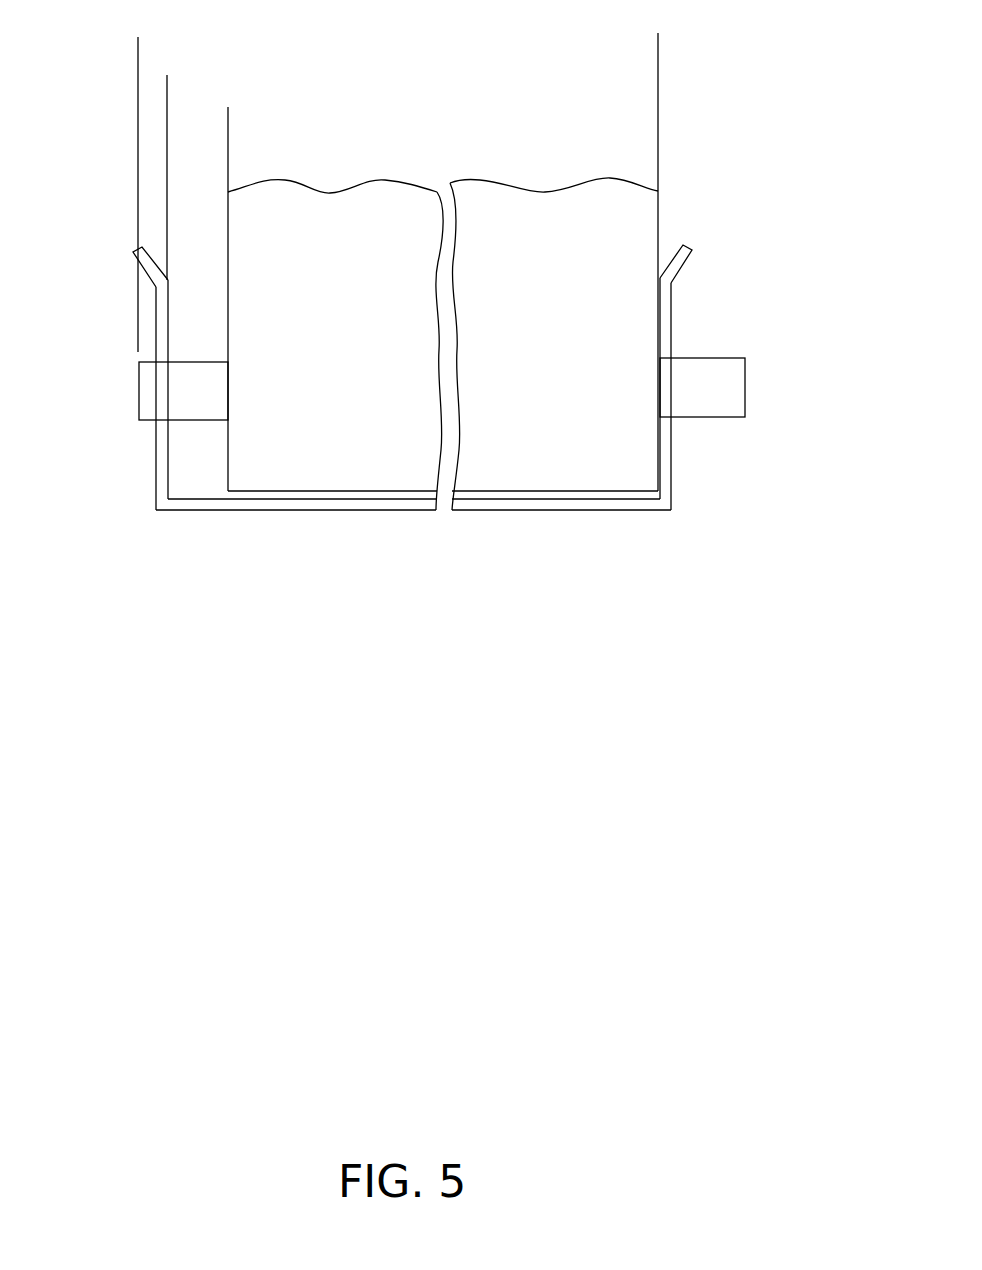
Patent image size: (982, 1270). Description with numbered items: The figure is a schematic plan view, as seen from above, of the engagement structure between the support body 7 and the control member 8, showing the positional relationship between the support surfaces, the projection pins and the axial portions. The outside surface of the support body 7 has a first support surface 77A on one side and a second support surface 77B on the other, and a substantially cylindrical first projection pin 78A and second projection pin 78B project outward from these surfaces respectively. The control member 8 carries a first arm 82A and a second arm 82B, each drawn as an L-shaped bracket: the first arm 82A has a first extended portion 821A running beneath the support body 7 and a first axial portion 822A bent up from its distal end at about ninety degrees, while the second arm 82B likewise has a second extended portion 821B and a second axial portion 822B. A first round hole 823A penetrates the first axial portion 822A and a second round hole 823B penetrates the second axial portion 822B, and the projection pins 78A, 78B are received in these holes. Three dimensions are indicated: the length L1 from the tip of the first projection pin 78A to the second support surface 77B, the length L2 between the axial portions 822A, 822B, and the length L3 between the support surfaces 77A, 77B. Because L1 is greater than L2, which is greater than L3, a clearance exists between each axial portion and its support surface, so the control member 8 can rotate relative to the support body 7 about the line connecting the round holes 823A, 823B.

The support body 7 is at (492, 323).
The first support surface 77A is at (230, 296).
The second support surface 77B is at (658, 231).
The first projection pin 78A is at (222, 391).
The second projection pin 78B is at (735, 392).
The control member 8 is at (398, 434).
The first arm 82A is at (237, 435).
The second arm 82B is at (605, 434).
The first extended portion 821A is at (209, 505).
The second extended portion 821B is at (561, 542).
The first axial portion 822A is at (162, 449).
The second axial portion 822B is at (671, 448).
The first round hole 823A is at (163, 358).
The second round hole 823B is at (668, 362).
The length L1 is at (648, 51).
The length L2 is at (648, 84).
The length L3 is at (648, 117).